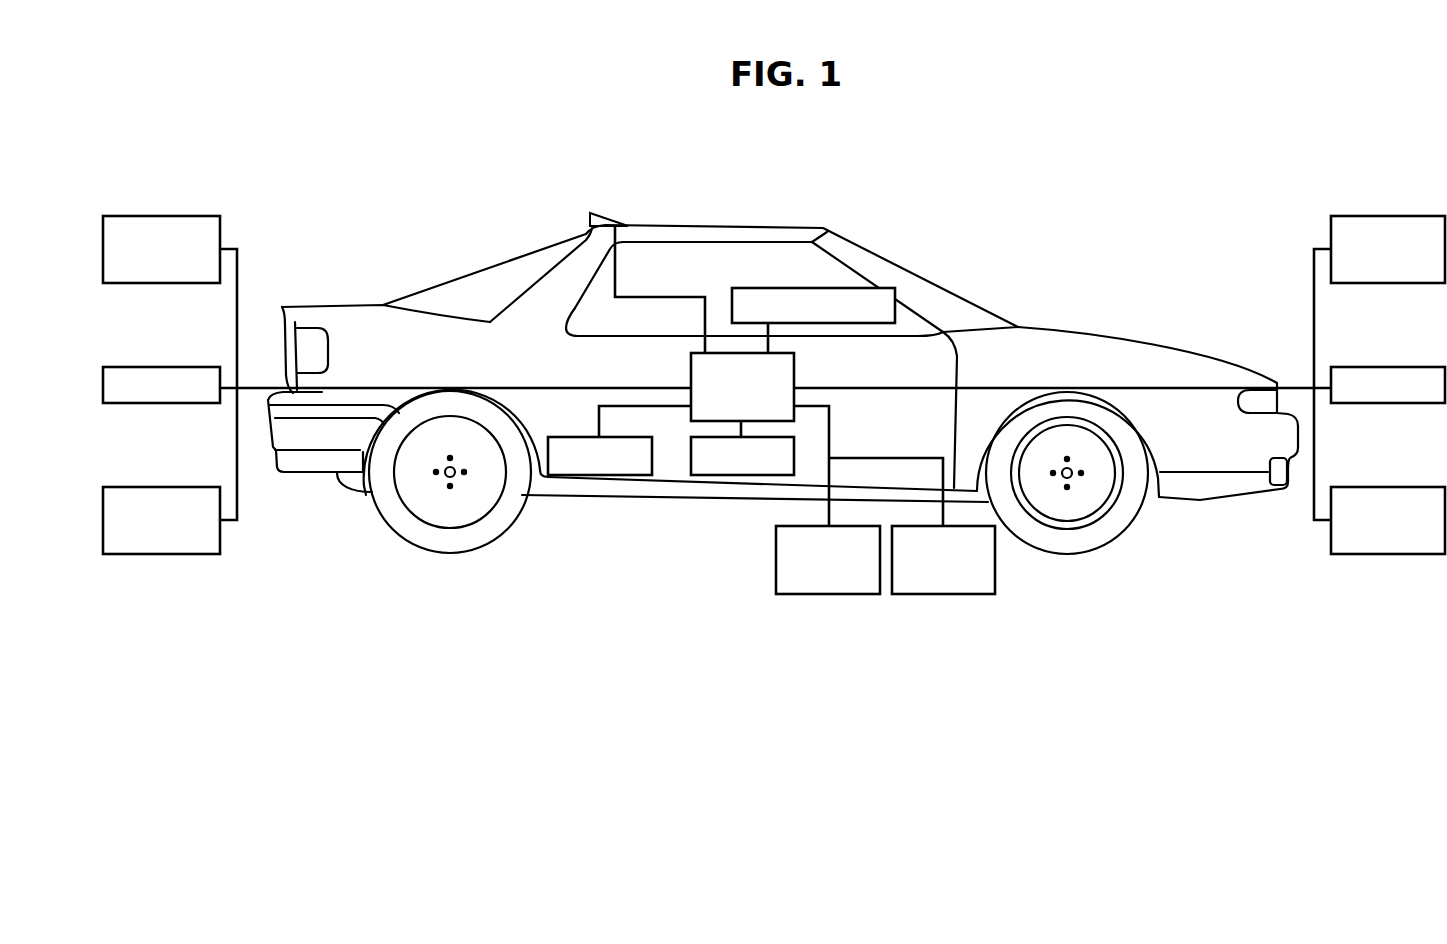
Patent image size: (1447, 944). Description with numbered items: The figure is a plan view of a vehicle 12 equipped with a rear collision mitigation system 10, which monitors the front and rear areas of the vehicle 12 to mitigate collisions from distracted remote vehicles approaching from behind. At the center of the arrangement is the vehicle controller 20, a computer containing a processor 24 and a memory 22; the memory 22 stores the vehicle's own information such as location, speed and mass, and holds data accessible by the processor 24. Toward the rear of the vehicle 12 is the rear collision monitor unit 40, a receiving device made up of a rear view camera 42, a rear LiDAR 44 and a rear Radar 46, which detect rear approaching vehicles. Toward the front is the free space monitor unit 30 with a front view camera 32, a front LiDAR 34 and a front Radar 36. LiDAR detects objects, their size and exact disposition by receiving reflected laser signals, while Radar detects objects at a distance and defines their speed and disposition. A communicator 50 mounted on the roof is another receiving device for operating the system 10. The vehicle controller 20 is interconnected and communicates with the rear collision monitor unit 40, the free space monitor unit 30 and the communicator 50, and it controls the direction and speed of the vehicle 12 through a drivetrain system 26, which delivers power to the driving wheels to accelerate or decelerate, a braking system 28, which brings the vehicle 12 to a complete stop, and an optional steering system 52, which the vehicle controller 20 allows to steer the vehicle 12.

The rear collision mitigation system 10 is at (628, 172).
The vehicle 12 is at (1090, 340).
The vehicle controller 20 is at (690, 372).
The memory 22 is at (707, 476).
The processor 24 is at (602, 476).
The drivetrain system 26 is at (810, 596).
The braking system 28 is at (970, 596).
The free space monitor unit 30 is at (1304, 220).
The front view camera 32 is at (1388, 216).
The front LiDAR 34 is at (1368, 367).
The front Radar 36 is at (1368, 487).
The rear collision monitor unit 40 is at (226, 207).
The rear view camera 42 is at (170, 216).
The rear LiDAR 44 is at (166, 367).
The rear Radar 46 is at (176, 487).
The communicator 50 is at (590, 213).
The steering system 52 is at (832, 287).